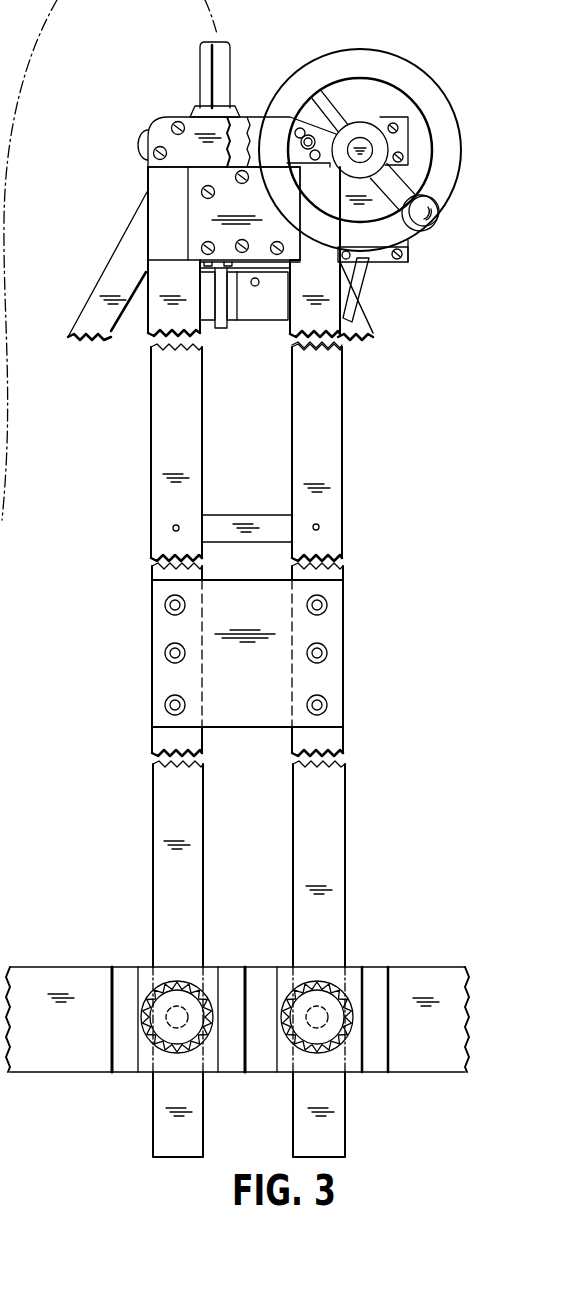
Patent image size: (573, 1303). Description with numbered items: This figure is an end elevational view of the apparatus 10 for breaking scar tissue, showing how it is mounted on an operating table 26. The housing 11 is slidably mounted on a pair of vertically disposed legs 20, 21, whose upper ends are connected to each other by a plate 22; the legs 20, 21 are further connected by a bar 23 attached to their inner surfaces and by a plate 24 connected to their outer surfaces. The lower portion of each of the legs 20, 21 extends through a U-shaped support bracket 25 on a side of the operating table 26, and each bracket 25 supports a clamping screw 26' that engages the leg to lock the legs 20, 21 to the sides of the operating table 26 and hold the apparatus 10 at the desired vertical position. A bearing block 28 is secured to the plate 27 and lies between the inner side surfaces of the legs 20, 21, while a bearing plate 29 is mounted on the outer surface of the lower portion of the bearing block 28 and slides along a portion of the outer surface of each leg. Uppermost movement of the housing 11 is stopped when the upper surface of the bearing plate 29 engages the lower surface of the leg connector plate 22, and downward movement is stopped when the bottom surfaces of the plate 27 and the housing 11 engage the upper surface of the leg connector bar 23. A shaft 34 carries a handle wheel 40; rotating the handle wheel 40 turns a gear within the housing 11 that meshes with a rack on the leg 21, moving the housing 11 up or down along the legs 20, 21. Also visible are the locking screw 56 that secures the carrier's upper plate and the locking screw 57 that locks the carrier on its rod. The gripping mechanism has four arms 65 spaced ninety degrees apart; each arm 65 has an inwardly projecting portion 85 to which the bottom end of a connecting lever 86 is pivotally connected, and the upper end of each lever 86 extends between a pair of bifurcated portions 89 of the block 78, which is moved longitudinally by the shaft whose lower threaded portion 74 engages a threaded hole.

The apparatus 10 is at (248, 578).
The housing 11 is at (367, 105).
The leg 20 is at (162, 508).
The leg 21 is at (333, 510).
The plate 22 is at (163, 120).
The bar 23 is at (257, 520).
The plate 24 is at (268, 727).
The U-shaped support bracket 25 is at (145, 966).
The operating table 26 is at (237, 1045).
The clamping screw 26' is at (150, 1053).
The plate 27 is at (390, 262).
The bearing block 28 is at (248, 115).
The bearing plate 29 is at (193, 180).
The shaft 34 is at (363, 146).
The handle wheel 40 is at (438, 84).
The locking screw 56 is at (197, 110).
The locking screw 57 is at (128, 148).
The arm 65 is at (140, 250).
The lower threaded portion 74 is at (203, 268).
The block 78 is at (280, 323).
The inwardly projecting portion 85 is at (130, 337).
The connecting lever 86 is at (292, 334).
The bifurcated portions 89 is at (203, 312).